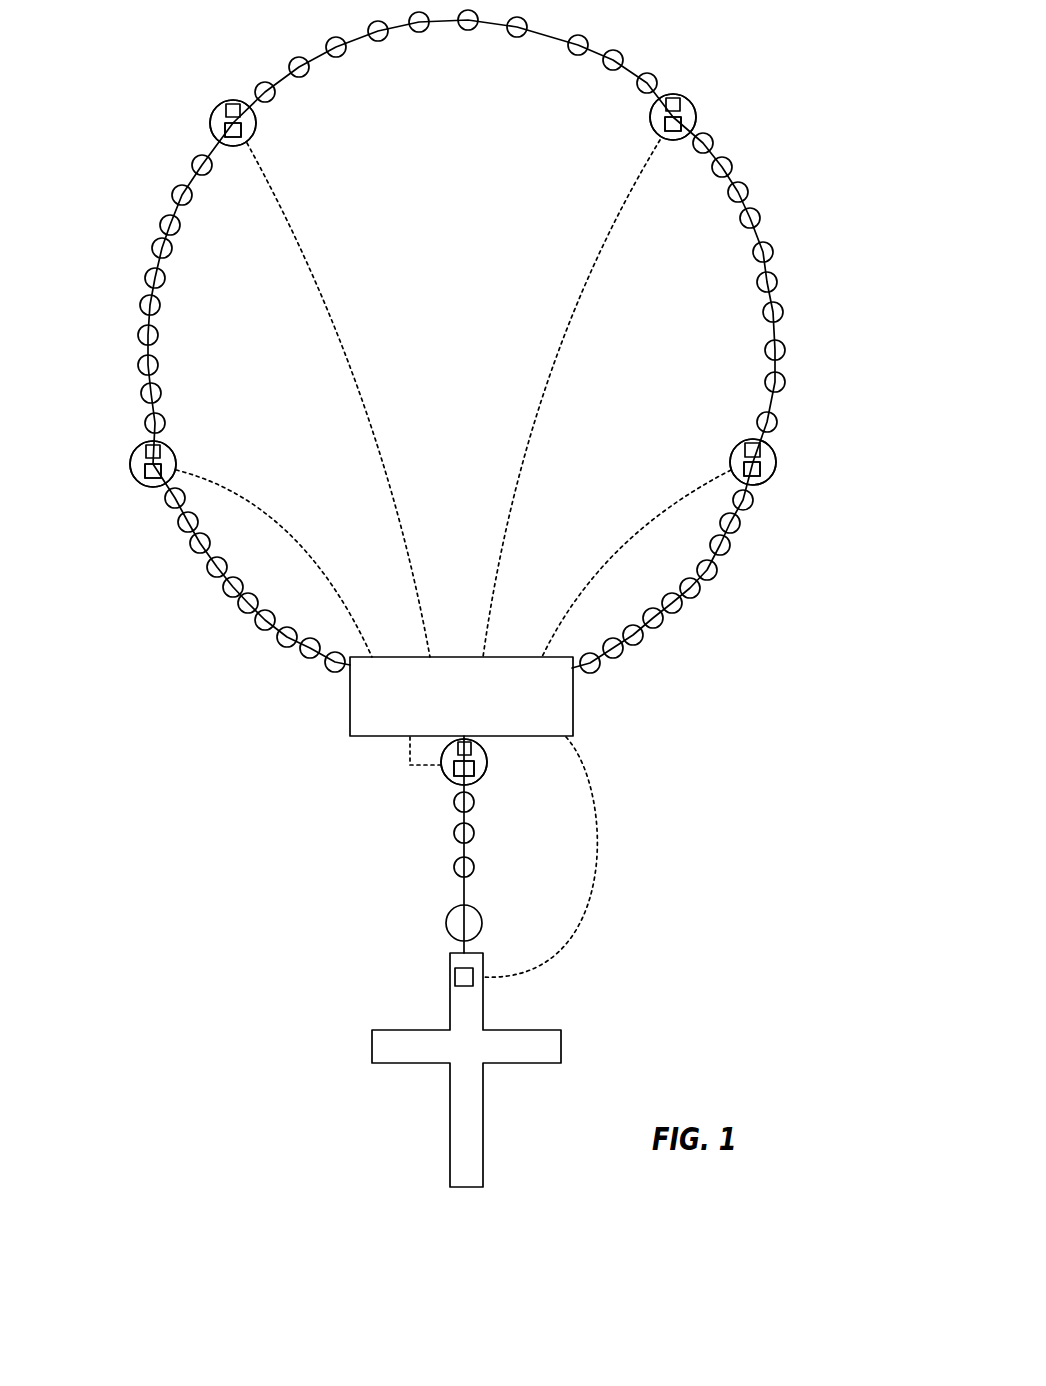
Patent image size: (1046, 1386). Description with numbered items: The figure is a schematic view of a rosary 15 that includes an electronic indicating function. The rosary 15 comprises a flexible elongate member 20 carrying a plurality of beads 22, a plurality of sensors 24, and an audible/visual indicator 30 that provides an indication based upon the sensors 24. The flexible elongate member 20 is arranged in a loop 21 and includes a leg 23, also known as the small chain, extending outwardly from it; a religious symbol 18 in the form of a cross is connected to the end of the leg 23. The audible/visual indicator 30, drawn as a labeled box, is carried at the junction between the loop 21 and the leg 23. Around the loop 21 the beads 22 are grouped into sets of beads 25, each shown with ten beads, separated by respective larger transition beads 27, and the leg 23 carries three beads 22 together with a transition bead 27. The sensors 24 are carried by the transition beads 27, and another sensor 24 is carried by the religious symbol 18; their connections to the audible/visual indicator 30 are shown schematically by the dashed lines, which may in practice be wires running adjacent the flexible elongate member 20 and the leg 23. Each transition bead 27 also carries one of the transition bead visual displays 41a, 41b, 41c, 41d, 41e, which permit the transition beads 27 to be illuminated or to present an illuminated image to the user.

The rosary 15 is at (207, 663).
The religious symbol 18 is at (562, 1047).
The flexible elongate member 20 is at (205, 558).
The loop 21 is at (141, 320).
The beads 22 is at (165, 220).
The leg 23 is at (480, 846).
The sensors 24 is at (223, 129).
The set of beads 25 is at (788, 273).
The transition bead 27 is at (219, 106).
The audible/visual indicator 30 is at (573, 723).
The transition bead visual display 41a is at (762, 450).
The transition bead visual display 41b is at (681, 105).
The transition bead visual display 41c is at (239, 104).
The transition bead visual display 41d is at (146, 447).
The transition bead visual display 41e is at (471, 748).